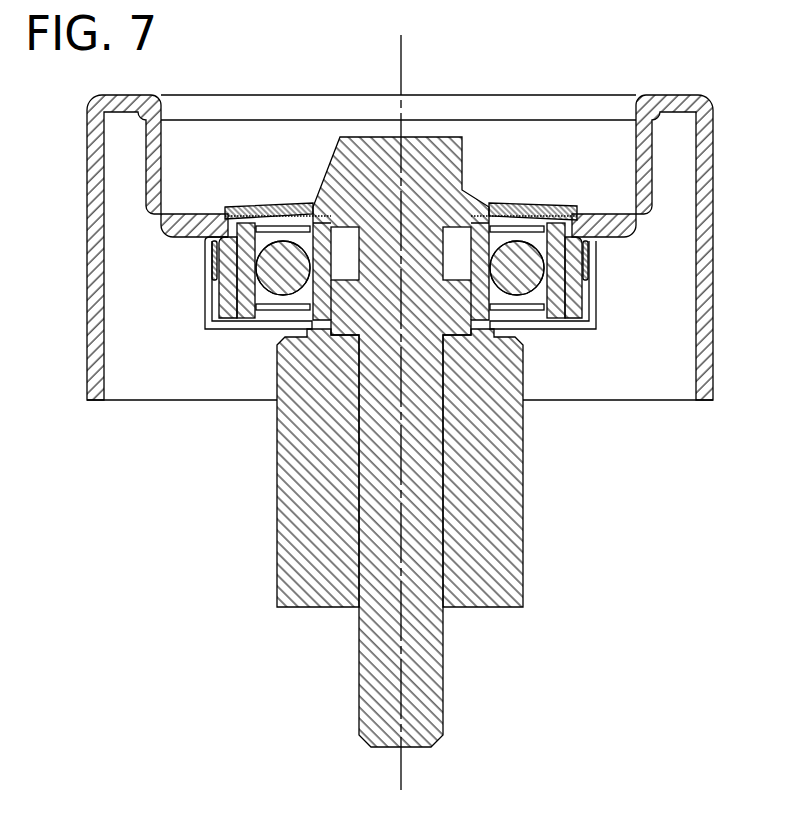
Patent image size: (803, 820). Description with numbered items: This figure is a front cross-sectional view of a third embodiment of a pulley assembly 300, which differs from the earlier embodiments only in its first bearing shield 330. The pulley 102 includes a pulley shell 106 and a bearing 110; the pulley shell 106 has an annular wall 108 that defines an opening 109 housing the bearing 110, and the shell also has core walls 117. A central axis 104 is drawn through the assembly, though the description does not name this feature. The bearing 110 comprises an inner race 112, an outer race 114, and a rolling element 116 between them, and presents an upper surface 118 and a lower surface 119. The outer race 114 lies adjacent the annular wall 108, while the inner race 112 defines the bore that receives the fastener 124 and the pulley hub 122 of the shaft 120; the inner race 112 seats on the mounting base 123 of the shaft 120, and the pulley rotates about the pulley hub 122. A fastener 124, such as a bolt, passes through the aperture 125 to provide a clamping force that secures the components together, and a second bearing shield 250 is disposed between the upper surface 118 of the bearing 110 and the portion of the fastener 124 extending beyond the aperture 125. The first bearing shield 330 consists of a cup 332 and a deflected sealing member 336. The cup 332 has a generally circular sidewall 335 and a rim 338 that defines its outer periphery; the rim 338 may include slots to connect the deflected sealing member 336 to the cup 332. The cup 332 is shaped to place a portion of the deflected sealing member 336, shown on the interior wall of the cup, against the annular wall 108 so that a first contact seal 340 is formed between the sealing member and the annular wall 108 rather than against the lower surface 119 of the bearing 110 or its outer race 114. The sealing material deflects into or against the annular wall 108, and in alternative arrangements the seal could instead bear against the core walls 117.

The pulley assembly 300 is at (742, 118).
The pulley 102 is at (593, 94).
The axis 104 is at (403, 64).
The pulley shell 106 is at (703, 254).
The annular wall 108 is at (107, 364).
The opening 109 is at (572, 288).
The bearing 110 is at (226, 302).
The inner race 112 is at (318, 234).
The outer race 114 is at (247, 240).
The rolling element 116 is at (284, 284).
The core walls 117 is at (614, 236).
The upper surface 118 is at (270, 225).
The lower surface 119 is at (268, 300).
The shaft 120 is at (438, 405).
The pulley hub 122 is at (480, 347).
The mounting base 123 is at (452, 298).
The fastener 124 is at (437, 658).
The aperture 125 is at (456, 237).
The second bearing shield 250 is at (585, 200).
The first bearing shield 330 is at (615, 330).
The cup 332 is at (562, 334).
The sidewall 335 is at (598, 303).
The deflected sealing member 336 is at (212, 257).
The rim 338 is at (207, 243).
The first contact seal 340 is at (215, 281).